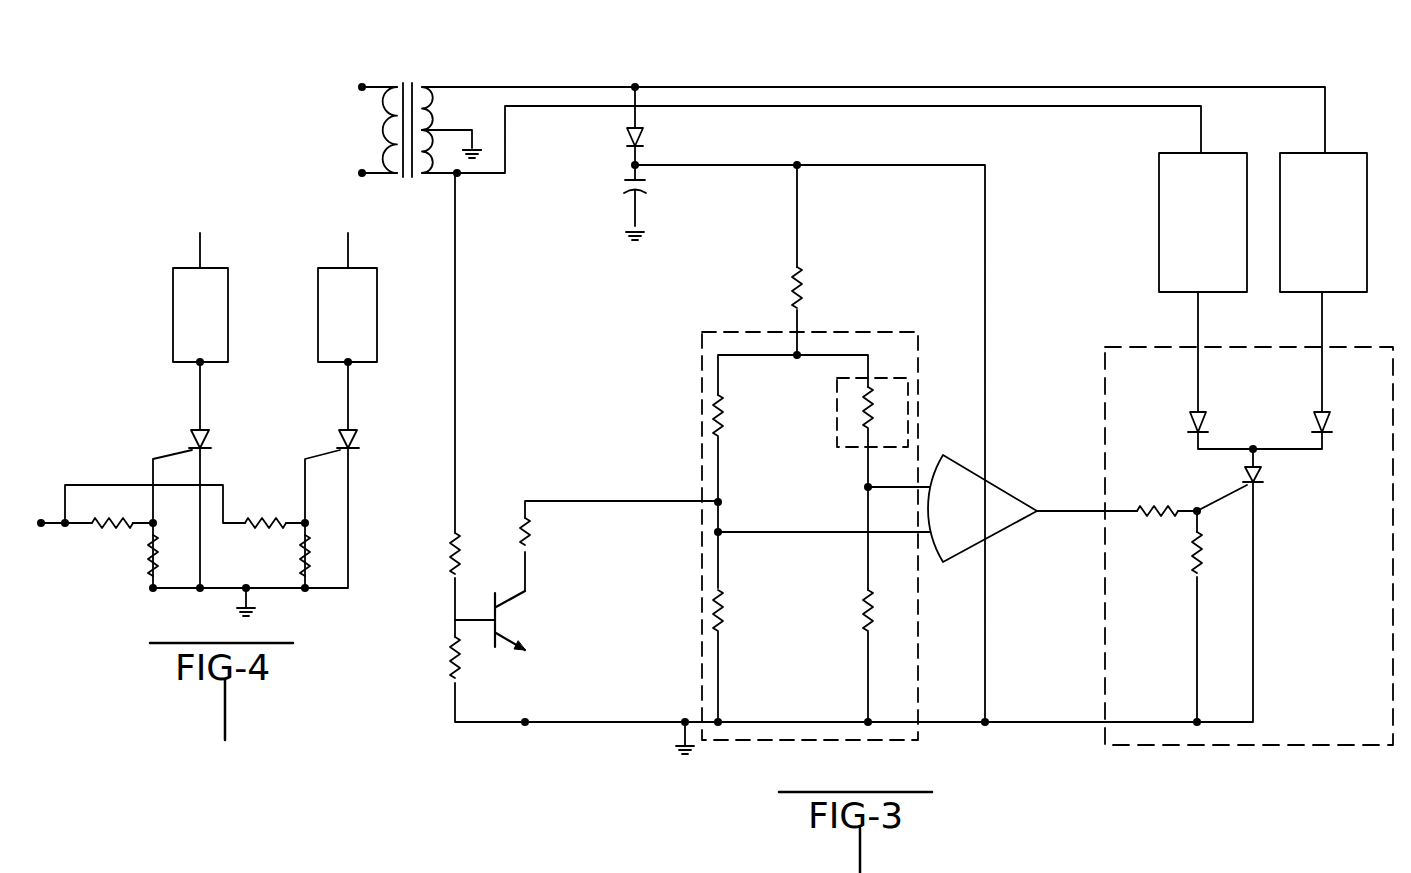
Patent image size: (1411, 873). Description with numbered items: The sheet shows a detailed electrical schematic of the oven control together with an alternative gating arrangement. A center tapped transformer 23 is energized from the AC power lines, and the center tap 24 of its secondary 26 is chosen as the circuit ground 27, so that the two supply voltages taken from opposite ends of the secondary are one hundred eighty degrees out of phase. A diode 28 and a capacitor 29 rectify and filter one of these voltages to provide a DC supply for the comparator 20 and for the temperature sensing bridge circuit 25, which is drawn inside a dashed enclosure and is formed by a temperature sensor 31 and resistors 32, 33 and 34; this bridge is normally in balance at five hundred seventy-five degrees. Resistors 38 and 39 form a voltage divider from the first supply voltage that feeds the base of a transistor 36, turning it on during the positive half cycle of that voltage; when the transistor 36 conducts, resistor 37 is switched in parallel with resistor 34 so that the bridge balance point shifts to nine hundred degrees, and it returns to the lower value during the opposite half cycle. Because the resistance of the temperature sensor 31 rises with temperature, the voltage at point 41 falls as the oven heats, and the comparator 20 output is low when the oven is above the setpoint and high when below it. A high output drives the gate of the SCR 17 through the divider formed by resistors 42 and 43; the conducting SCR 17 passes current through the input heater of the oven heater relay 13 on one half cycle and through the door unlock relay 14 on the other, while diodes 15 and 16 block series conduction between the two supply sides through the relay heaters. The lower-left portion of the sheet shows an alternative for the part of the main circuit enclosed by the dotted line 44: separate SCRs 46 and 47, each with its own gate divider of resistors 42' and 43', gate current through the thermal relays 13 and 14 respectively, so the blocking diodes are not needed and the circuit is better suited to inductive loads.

In FIG. 3, the oven heater relay 13 is at (1159, 201).
In FIG. 4, the oven heater relay 13 is at (173, 318).
In FIG. 3, the door unlock relay 14 is at (1346, 153).
In FIG. 4, the door unlock relay 14 is at (377, 329).
In FIG. 3, the diode 15 is at (1184, 415).
In FIG. 3, the diode 16 is at (1334, 420).
In FIG. 3, the SCR 17 is at (1262, 476).
In FIG. 3, the comparator 20 is at (1003, 496).
In FIG. 3, the center tapped transformer 23 is at (437, 68).
In FIG. 3, the center tap 24 is at (448, 128).
In FIG. 3, the temperature sensing bridge circuit 25 is at (704, 330).
In FIG. 3, the secondary 26 is at (436, 90).
In FIG. 3, the circuit ground 27 is at (486, 153).
In FIG. 3, the diode 28 is at (644, 139).
In FIG. 3, the capacitor 29 is at (643, 184).
In FIG. 3, the temperature sensor 31 is at (839, 444).
In FIG. 3, the resistor 32 is at (864, 592).
In FIG. 3, the resistor 33 is at (718, 421).
In FIG. 3, the resistor 34 is at (708, 603).
In FIG. 3, the transistor 36 is at (518, 610).
In FIG. 3, the resistor 37 is at (534, 528).
In FIG. 3, the resistor 38 is at (448, 570).
In FIG. 3, the resistor 39 is at (448, 652).
In FIG. 3, the point 41 is at (866, 488).
In FIG. 3, the resistor 42 is at (1150, 495).
In FIG. 3, the resistor 43 is at (1164, 554).
In FIG. 3, the dotted enclosure 44 is at (1113, 747).
In FIG. 4, the resistor 42' is at (180, 501).
In FIG. 4, the resistor 43' is at (200, 560).
In FIG. 4, the SCR 46 is at (204, 436).
In FIG. 4, the SCR 47 is at (366, 436).